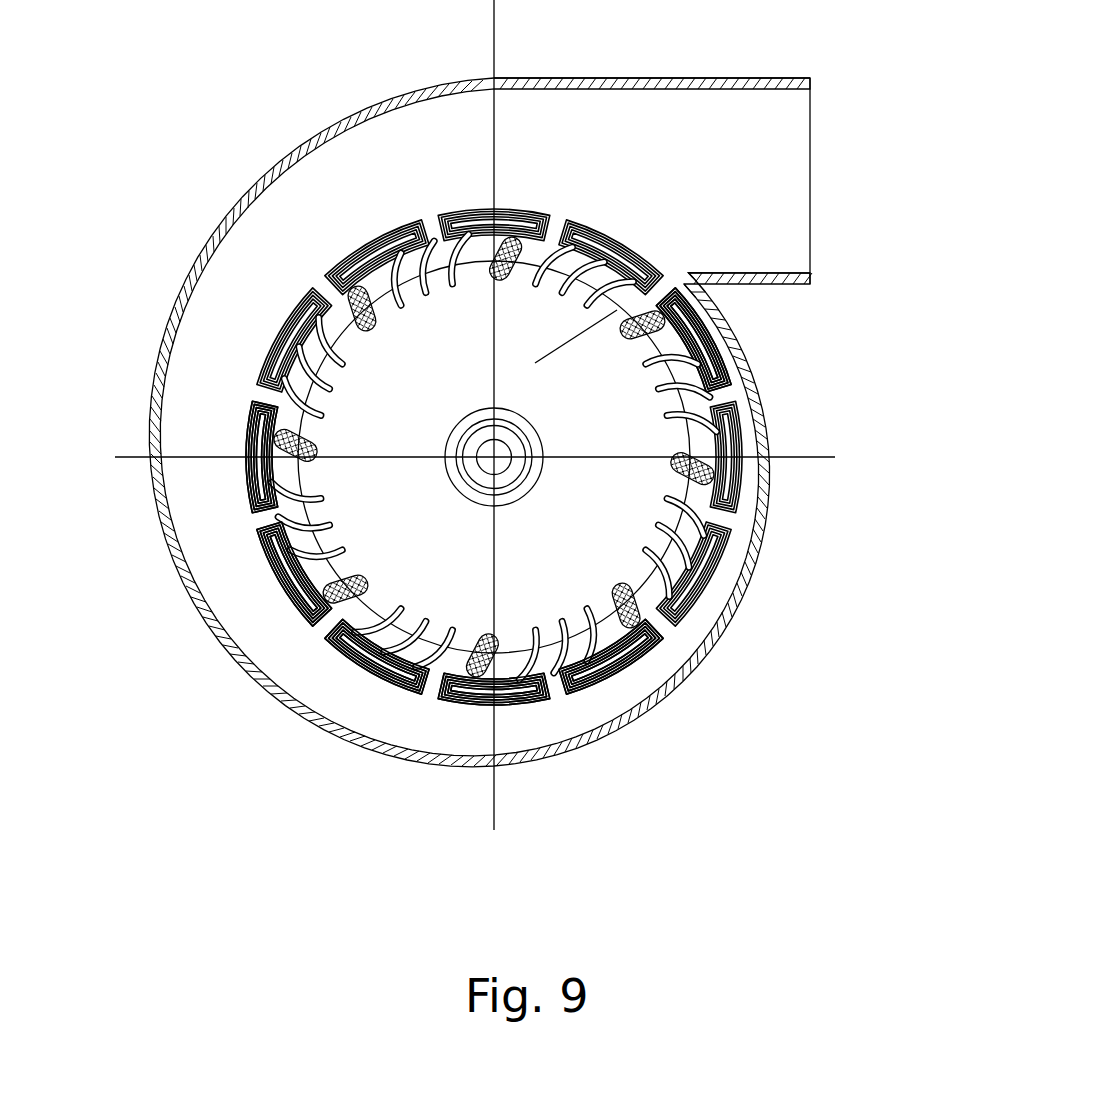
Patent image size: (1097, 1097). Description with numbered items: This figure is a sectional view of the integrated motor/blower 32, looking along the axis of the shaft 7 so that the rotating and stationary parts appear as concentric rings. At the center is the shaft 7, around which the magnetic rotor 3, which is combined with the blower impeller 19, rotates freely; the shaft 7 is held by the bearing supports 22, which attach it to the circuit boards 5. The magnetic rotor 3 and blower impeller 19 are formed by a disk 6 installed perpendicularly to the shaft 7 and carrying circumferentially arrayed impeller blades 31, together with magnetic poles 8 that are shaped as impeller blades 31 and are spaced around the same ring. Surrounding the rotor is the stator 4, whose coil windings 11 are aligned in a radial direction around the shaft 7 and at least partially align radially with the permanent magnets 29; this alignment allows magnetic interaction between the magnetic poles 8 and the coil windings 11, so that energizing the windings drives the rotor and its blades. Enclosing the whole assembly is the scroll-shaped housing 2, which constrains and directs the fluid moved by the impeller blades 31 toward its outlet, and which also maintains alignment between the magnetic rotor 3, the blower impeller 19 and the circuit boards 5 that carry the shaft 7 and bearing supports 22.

The integrated motor/blower 32 is at (209, 121).
The housing 2 is at (363, 122).
The stator 4 is at (597, 138).
The circuit boards 5 is at (278, 337).
The disk 6 is at (693, 293).
The coil windings 11 is at (722, 357).
The bearing supports 22 is at (523, 440).
The shaft 7 is at (494, 457).
The impeller blades 31 is at (503, 650).
The magnetic poles 8 is at (647, 650).
The permanent magnets 29 is at (300, 615).
The blower impeller 19 is at (323, 640).
The magnetic rotor 3 is at (358, 612).